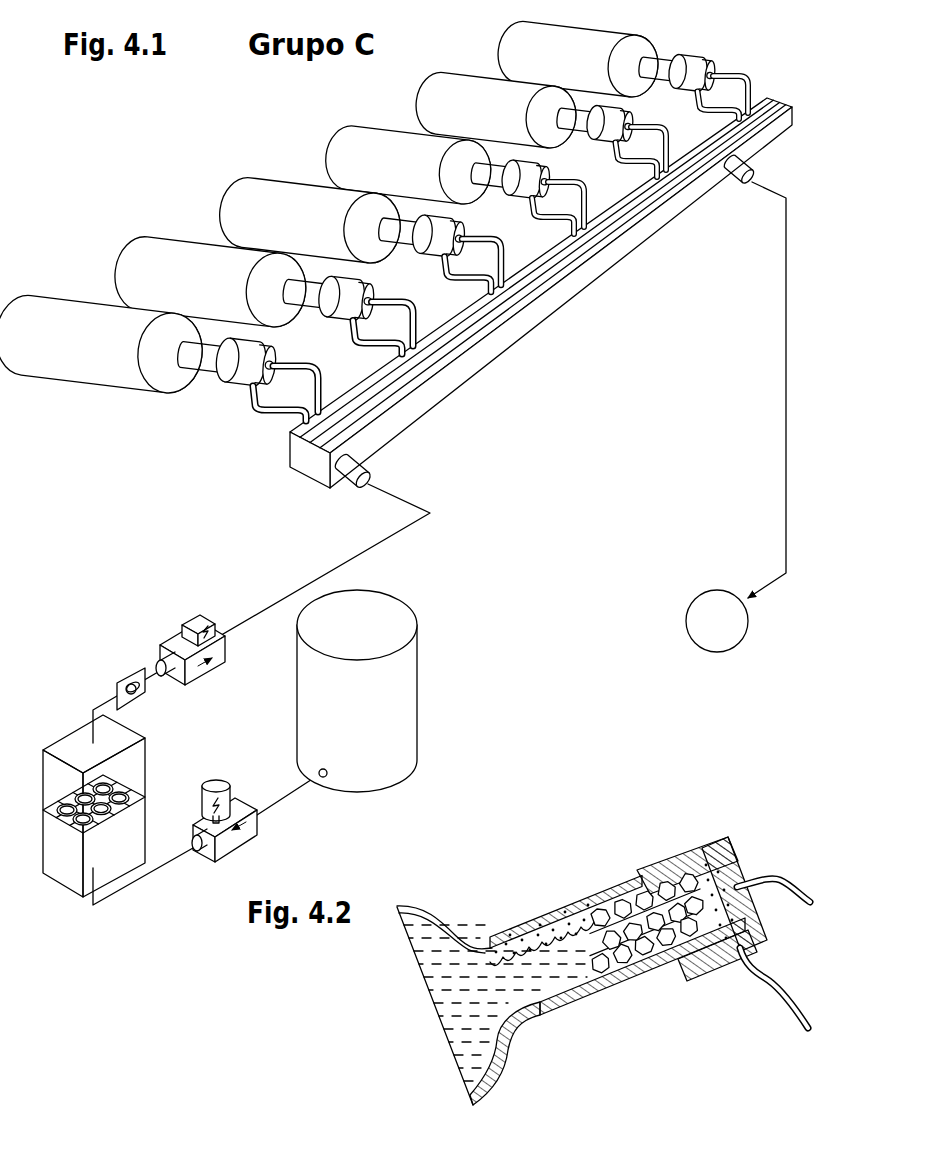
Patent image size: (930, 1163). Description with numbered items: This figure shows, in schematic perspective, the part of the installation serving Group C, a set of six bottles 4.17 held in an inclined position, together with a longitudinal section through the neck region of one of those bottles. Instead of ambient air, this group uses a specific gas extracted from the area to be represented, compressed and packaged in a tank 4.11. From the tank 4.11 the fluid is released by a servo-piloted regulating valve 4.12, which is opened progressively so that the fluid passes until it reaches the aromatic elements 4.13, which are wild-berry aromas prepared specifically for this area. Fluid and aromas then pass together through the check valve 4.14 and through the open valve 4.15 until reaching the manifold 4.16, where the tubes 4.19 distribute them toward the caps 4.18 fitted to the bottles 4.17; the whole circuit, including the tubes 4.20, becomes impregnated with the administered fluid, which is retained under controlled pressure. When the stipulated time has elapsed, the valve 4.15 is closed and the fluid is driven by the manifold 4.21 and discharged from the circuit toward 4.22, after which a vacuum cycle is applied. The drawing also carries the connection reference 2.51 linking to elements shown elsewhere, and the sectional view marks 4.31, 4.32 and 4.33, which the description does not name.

In FIG. 4.1, the tank 4.11 is at (400, 717).
In FIG. 4.1, the servo-piloted regulating valve 4.12 is at (213, 780).
In FIG. 4.1, the aromatic elements 4.13 is at (108, 778).
In FIG. 4.1, the check valve 4.14 is at (122, 672).
In FIG. 4.1, the valve 4.15 is at (178, 633).
In FIG. 4.1, the manifold 4.16 is at (364, 466).
In FIG. 4.1, the bottles 4.17 is at (126, 385).
In FIG. 4.1, the caps 4.18 is at (239, 380).
In FIG. 4.1, the tubes 4.19 is at (306, 375).
In FIG. 4.1, the tubes 4.20 is at (722, 96).
In FIG. 4.1, the manifold 4.21 is at (756, 174).
In FIG. 4.1, the discharge point 4.22 is at (752, 586).
In FIG. 4.1, the referenced element of figure 2 2.51 is at (717, 621).
In FIG. 4.2, the liquid 4.31 is at (467, 1016).
In FIG. 4.2, the granular filter material 4.32 is at (570, 936).
In FIG. 4.2, the vessel wall 4.33 is at (539, 1013).